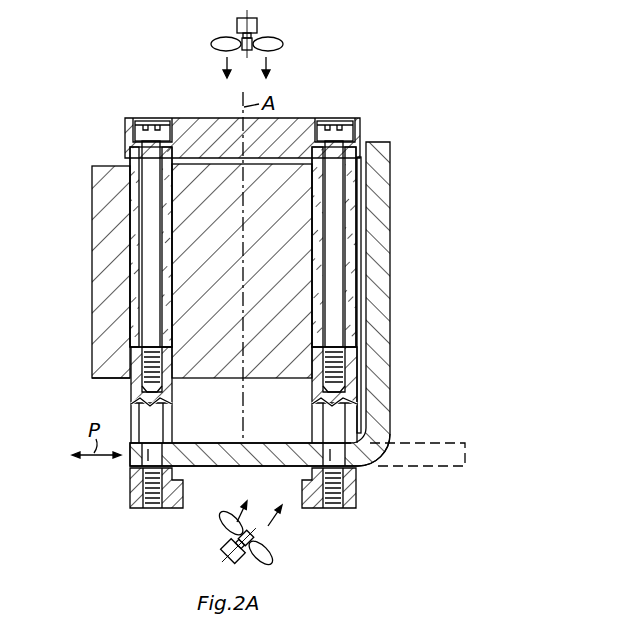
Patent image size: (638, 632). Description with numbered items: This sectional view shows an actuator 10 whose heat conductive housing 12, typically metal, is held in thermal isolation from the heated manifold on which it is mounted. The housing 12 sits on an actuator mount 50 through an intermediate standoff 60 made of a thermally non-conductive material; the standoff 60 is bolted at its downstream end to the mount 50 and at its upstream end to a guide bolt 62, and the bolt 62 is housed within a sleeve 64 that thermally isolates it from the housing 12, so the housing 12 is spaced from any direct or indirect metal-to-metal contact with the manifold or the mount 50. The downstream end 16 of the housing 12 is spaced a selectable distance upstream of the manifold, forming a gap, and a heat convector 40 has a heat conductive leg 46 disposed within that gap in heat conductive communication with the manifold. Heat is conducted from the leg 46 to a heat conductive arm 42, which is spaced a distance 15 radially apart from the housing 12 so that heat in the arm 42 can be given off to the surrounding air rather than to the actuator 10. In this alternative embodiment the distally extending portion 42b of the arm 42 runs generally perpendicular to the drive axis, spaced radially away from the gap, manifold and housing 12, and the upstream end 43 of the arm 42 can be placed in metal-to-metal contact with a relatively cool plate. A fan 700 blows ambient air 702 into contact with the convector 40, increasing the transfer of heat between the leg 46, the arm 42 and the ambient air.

The actuator 10 is at (128, 102).
The heat conductive housing 12 is at (92, 177).
The distance 15 is at (362, 132).
The downstream end 16 is at (100, 380).
The heat convector 40 is at (366, 471).
The heat conductive arm 42 is at (391, 212).
The distally extending portion 42b is at (412, 466).
The upstream end 43 is at (372, 142).
The heat conductive leg 46 is at (208, 468).
The actuator mount 50 is at (126, 491).
The standoff 60 is at (172, 418).
The guide bolt 62 is at (148, 293).
The sleeve 64 is at (133, 254).
The fan 700 is at (258, 28).
The ambient air 702 is at (267, 62).